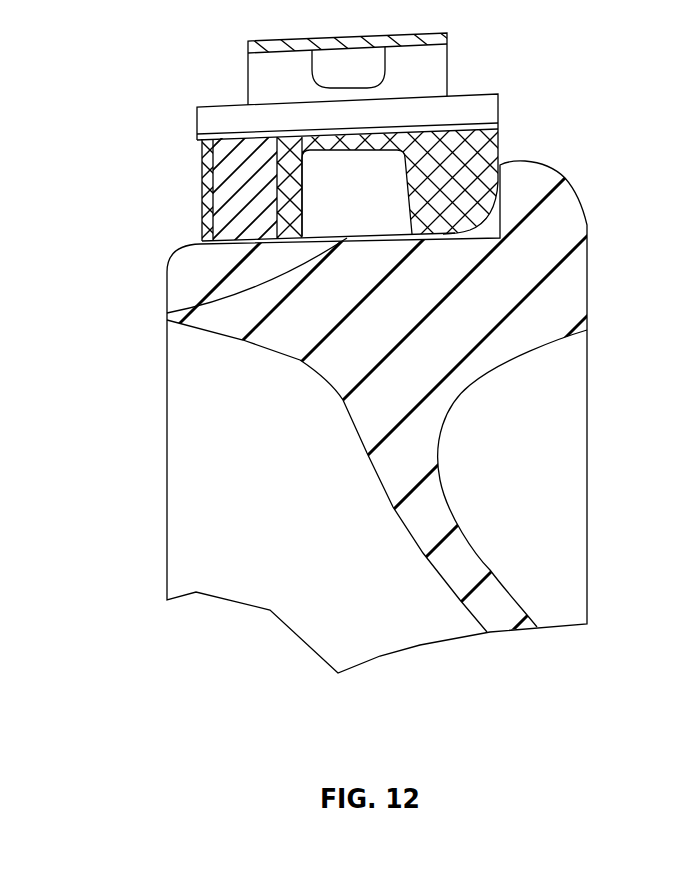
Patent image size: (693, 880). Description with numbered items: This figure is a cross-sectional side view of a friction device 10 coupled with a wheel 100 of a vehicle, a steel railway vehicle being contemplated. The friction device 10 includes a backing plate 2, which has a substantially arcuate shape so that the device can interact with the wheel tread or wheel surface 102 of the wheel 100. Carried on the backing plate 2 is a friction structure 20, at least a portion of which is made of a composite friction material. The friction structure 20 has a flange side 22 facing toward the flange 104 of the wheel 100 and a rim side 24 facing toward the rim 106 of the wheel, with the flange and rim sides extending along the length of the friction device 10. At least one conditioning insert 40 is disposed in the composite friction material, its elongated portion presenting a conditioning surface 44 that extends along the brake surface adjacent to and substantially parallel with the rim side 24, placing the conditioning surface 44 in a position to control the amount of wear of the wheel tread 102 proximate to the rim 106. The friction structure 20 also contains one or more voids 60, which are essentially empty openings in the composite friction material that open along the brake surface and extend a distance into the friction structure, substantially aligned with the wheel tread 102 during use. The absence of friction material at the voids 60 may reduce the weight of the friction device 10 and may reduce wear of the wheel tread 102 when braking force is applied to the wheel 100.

The backing plate 2 is at (463, 107).
The friction device 10 is at (432, 67).
The friction structure 20 is at (458, 148).
The flange side 22 is at (503, 158).
The rim side 24 is at (205, 158).
The conditioning insert 40 is at (247, 195).
The conditioning surface 44 is at (255, 240).
The void 60 is at (348, 185).
The wheel 100 is at (553, 455).
The wheel tread 102 is at (183, 321).
The flange 104 is at (533, 185).
The rim 106 is at (247, 243).